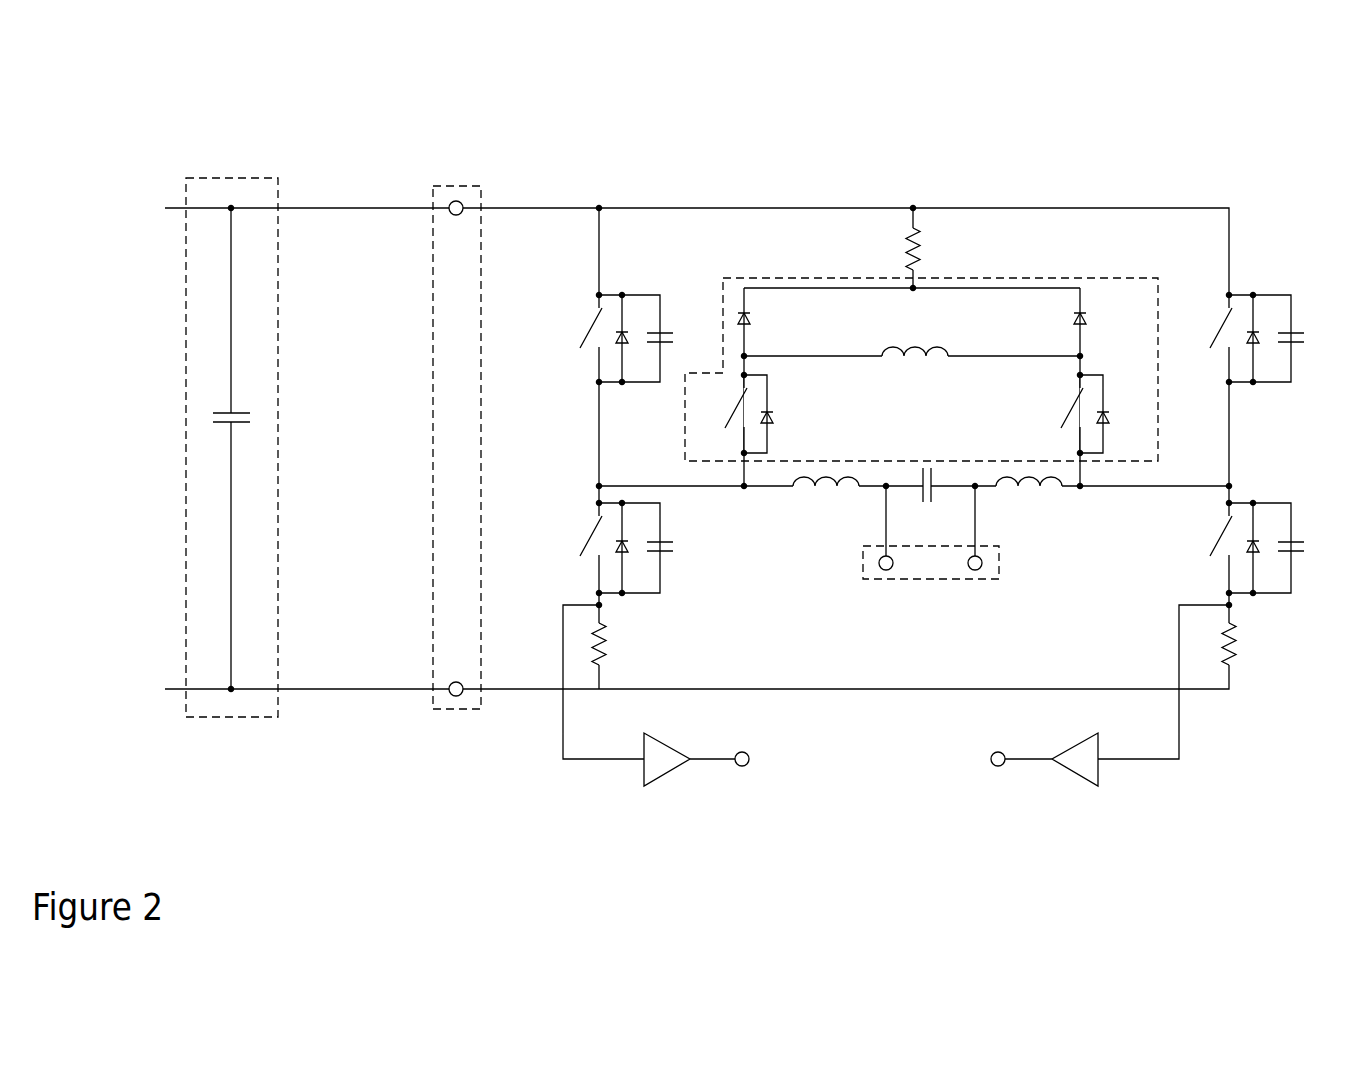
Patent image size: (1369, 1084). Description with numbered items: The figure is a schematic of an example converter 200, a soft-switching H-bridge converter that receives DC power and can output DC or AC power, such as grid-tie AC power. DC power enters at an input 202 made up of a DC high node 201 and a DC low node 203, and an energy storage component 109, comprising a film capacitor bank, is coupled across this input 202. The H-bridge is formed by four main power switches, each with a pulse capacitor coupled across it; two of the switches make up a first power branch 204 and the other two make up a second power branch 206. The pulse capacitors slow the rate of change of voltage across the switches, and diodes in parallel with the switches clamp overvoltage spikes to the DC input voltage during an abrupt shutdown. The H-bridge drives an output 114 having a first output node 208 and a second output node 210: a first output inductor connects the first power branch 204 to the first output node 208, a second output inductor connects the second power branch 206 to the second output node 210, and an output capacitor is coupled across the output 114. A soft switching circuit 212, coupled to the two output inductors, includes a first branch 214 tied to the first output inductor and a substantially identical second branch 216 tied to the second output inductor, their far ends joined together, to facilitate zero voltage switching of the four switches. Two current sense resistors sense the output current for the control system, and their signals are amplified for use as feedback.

The converter 200 is at (670, 105).
The energy storage component 109 is at (259, 178).
The DC high node 201 is at (456, 200).
The input 202 is at (432, 366).
The DC low node 203 is at (456, 697).
The first power branch 204 is at (625, 278).
The second power branch 206 is at (1251, 280).
The first output node 208 is at (860, 562).
The second output node 210 is at (985, 562).
The soft switching circuit 212 is at (1124, 277).
The first branch 214 is at (800, 308).
The second branch 216 is at (1062, 307).
The output 114 is at (907, 582).